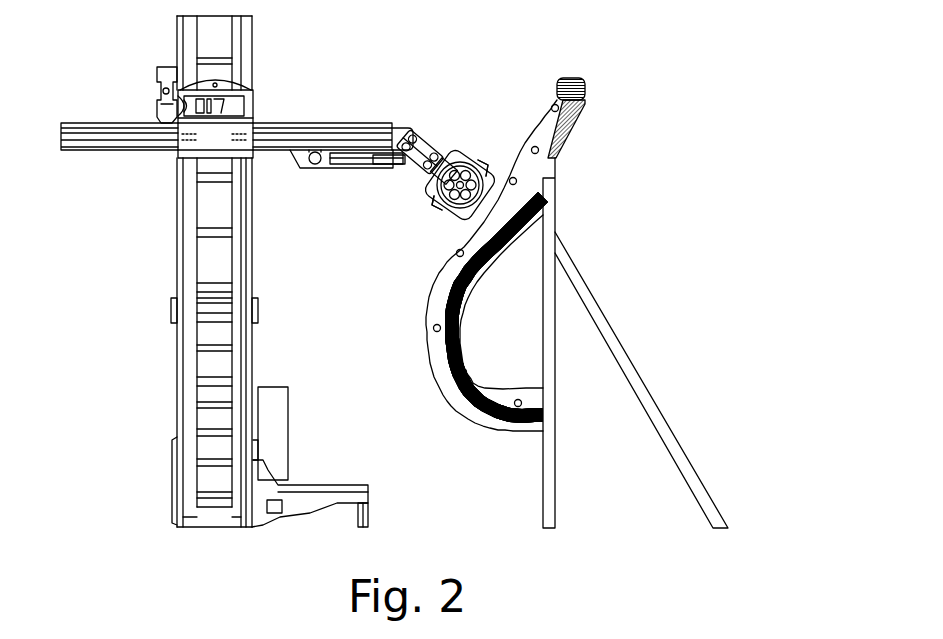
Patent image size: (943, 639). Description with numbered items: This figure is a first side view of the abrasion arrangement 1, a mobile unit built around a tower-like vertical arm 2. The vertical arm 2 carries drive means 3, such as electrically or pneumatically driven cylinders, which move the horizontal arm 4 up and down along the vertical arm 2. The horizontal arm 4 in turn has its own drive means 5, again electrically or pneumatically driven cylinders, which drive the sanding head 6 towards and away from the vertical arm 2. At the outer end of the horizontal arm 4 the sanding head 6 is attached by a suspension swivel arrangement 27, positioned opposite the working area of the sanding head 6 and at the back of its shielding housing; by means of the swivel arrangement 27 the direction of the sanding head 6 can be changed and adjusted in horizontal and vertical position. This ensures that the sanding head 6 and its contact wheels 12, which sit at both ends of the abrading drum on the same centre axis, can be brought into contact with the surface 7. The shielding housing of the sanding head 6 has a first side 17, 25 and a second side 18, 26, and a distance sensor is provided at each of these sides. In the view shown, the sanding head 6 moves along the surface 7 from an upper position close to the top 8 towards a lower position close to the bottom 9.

The abrasion arrangement 1 is at (128, 213).
The vertical arm 2 is at (185, 30).
The drive means 3 is at (273, 450).
The horizontal arm 4 is at (72, 146).
The drive means 5 is at (237, 126).
The sanding head 6 is at (453, 160).
The surface 7 is at (545, 110).
The top 8 is at (572, 79).
The bottom 9 is at (510, 420).
The contact wheel 12 is at (450, 215).
The first side 17 is at (467, 160).
The first side 25 is at (511, 125).
The second side 18 is at (440, 197).
The second side 26 is at (386, 221).
The suspension swivel arrangement 27 is at (437, 143).